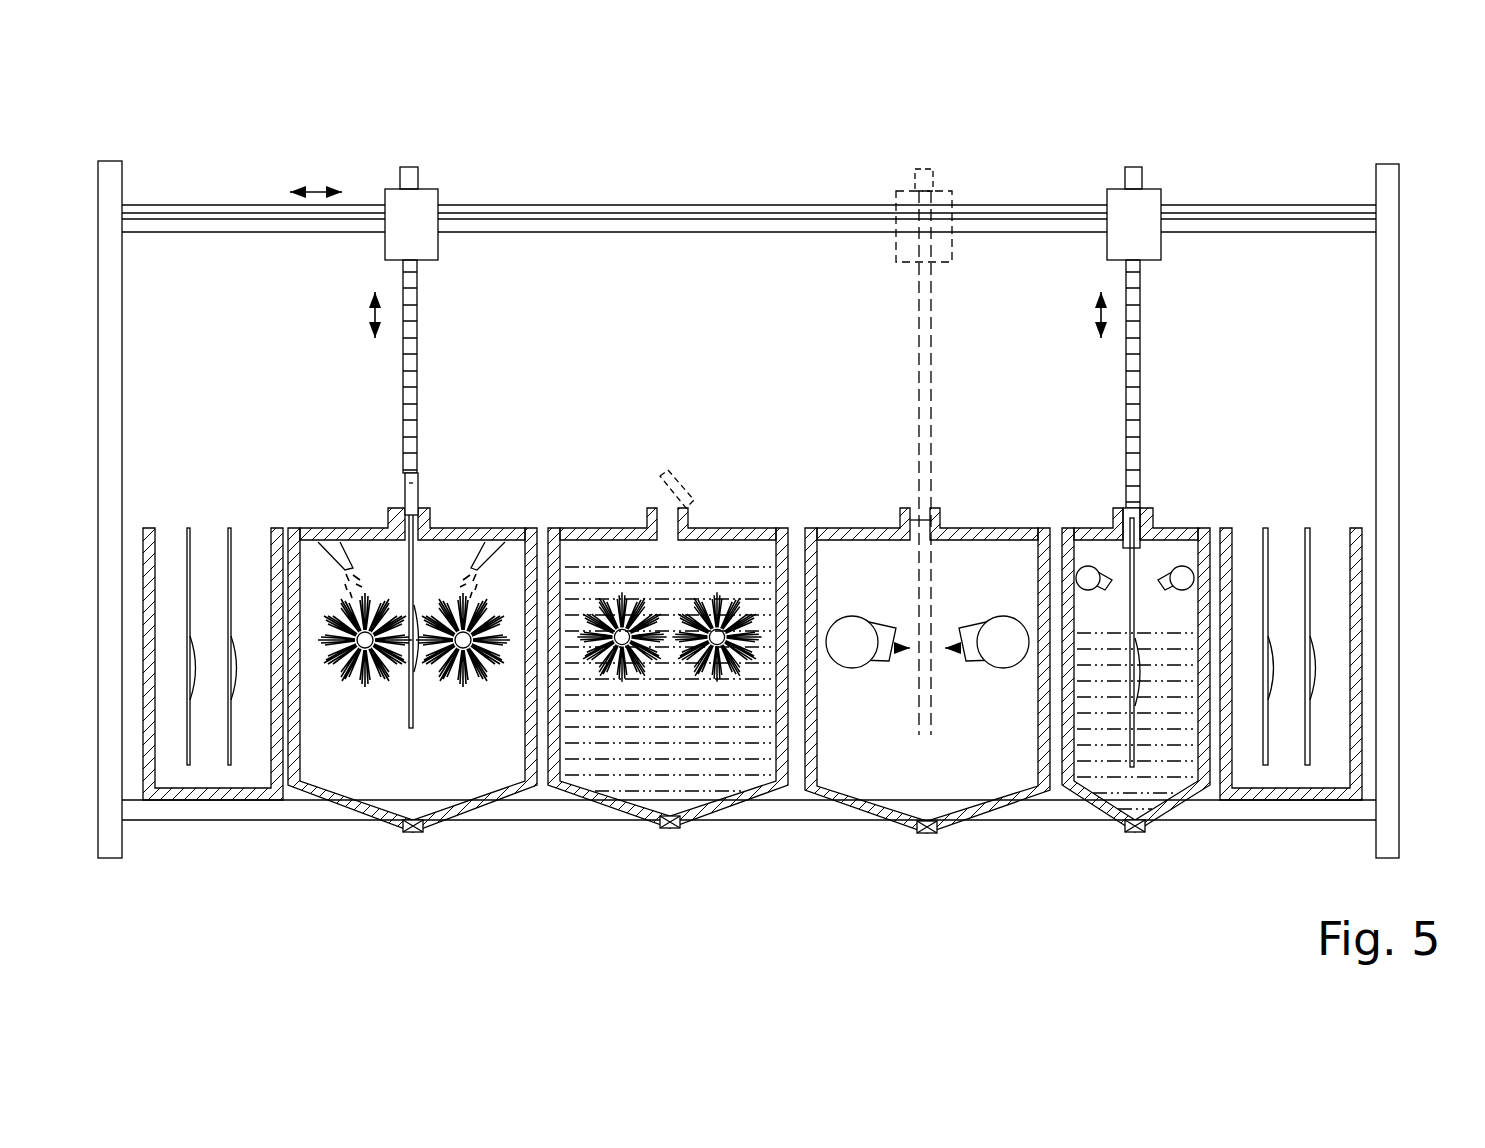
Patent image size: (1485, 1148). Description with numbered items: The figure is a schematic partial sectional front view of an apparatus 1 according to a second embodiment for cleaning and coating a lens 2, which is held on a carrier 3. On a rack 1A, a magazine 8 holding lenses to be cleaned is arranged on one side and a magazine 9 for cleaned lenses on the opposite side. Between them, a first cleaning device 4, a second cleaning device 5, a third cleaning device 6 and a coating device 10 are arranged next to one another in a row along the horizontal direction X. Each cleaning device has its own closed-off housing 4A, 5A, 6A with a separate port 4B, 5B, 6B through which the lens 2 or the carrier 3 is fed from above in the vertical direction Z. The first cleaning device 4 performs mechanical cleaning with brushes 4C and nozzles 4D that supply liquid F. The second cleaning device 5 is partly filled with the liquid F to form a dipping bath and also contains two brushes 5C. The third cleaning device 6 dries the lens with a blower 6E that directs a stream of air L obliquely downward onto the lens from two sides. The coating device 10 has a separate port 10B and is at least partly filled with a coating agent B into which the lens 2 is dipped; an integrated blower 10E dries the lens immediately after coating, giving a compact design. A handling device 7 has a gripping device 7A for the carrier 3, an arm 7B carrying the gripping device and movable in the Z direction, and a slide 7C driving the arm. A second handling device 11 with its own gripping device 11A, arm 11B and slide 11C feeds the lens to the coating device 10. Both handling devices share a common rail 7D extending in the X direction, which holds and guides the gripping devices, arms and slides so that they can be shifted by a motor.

The apparatus 1 is at (198, 126).
The rack 1A is at (1388, 735).
The lens 2 is at (235, 692).
The carrier 3 is at (191, 703).
The first cleaning device 4 is at (403, 627).
The housing 4A is at (280, 756).
The port 4B is at (418, 512).
The brushes 4C is at (367, 690).
The nozzles 4D is at (337, 538).
The second cleaning device 5 is at (668, 627).
The housing 5A is at (556, 748).
The port 5B is at (655, 508).
The brushes 5C is at (624, 682).
The third cleaning device 6 is at (927, 627).
The housing 6A is at (812, 748).
The port 6B is at (940, 522).
The blower 6E is at (852, 650).
The handling device 7 is at (406, 400).
The gripping device 7A is at (412, 478).
The arm 7B is at (410, 359).
The slide 7C is at (385, 196).
The rail 7D is at (590, 204).
The magazine 8 is at (146, 523).
The magazine 9 is at (1355, 523).
The coating device 10 is at (1155, 627).
The port 10B is at (1152, 520).
The blower 10E is at (1090, 592).
The second handling device 11 is at (1158, 420).
The gripping device 11A is at (1137, 506).
The arm 11B is at (1130, 440).
The slide 11C is at (1107, 196).
The horizontal direction X is at (318, 188).
The vertical direction Z is at (375, 314).
The liquid F is at (692, 745).
The stream of air L is at (903, 642).
The coating agent B is at (1118, 745).